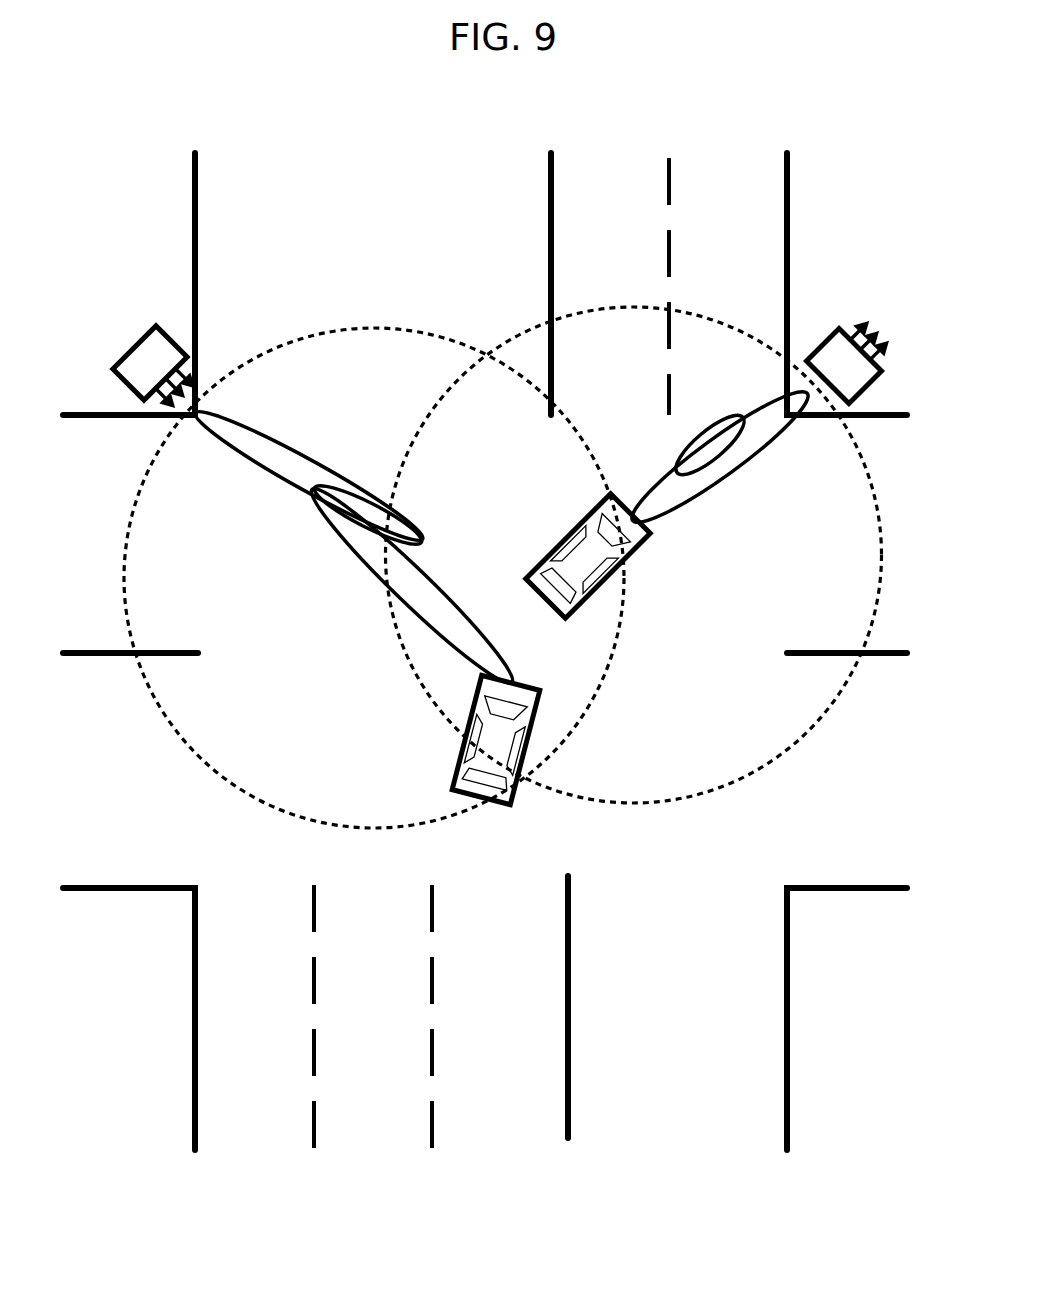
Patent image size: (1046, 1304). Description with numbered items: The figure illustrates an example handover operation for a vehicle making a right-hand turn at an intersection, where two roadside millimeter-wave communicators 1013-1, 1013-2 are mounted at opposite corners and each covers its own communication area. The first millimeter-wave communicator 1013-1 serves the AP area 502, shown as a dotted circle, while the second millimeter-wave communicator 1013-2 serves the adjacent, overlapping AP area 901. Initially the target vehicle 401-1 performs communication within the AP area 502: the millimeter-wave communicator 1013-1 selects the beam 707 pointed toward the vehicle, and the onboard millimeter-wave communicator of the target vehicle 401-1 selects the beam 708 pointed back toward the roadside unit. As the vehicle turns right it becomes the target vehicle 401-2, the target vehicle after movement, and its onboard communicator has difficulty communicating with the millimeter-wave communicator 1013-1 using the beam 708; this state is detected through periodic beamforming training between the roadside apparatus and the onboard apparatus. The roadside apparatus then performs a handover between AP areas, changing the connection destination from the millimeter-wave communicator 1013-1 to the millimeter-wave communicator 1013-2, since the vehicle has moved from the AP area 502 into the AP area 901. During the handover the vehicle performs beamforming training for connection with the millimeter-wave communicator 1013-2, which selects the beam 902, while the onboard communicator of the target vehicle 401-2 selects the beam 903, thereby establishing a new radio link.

The millimeter-wave communicator 1013-1 is at (125, 348).
The millimeter-wave communicator 1013-2 is at (907, 317).
The AP area 502 is at (433, 338).
The AP area 901 is at (693, 317).
The beam 707 is at (287, 455).
The beam 708 is at (453, 617).
The beam 902 is at (760, 440).
The beam 903 is at (673, 498).
The target vehicle 401-1 is at (507, 808).
The target vehicle 401-2 is at (628, 563).